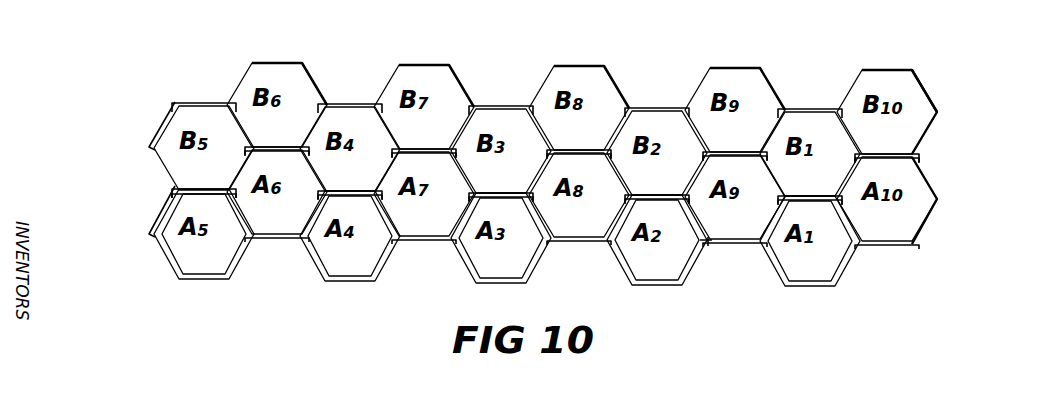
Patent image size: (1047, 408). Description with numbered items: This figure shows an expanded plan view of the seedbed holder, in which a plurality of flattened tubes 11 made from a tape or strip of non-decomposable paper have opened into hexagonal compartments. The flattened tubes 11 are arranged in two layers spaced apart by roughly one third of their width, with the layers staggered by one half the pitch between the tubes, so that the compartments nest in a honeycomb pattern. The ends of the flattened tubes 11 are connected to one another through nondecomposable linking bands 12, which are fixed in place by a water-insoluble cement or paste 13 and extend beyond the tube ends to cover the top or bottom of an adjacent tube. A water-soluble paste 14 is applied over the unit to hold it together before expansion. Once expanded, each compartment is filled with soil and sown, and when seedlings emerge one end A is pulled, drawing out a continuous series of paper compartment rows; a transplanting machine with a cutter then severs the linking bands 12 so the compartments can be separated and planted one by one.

The end of the seedbed holder A is at (824, 250).
The flattened tube 11 is at (840, 277).
The linking band 12 is at (752, 248).
The water-insoluble paste 13 is at (698, 250).
The water-soluble paste 14 is at (700, 234).